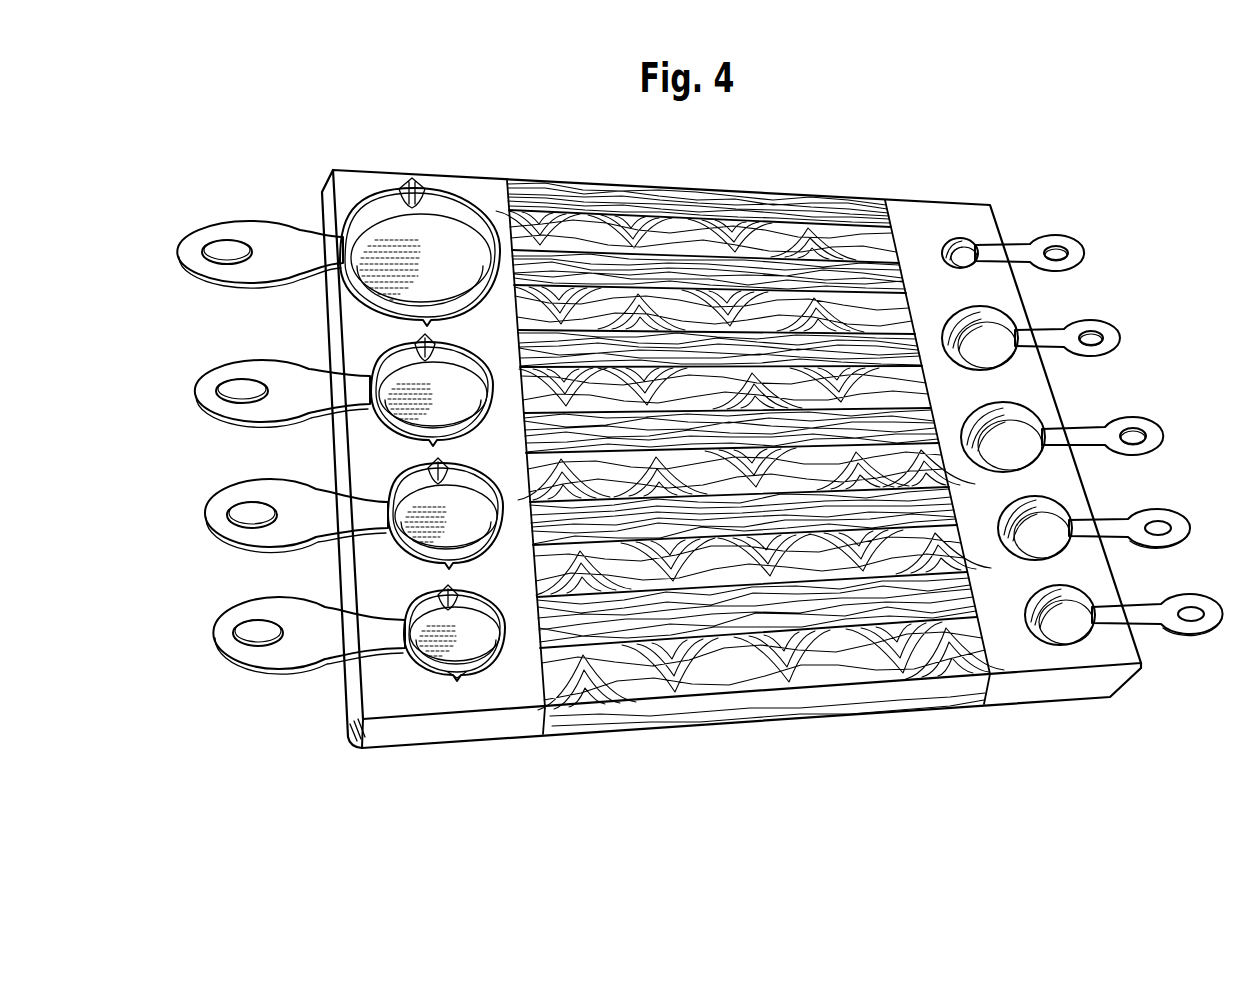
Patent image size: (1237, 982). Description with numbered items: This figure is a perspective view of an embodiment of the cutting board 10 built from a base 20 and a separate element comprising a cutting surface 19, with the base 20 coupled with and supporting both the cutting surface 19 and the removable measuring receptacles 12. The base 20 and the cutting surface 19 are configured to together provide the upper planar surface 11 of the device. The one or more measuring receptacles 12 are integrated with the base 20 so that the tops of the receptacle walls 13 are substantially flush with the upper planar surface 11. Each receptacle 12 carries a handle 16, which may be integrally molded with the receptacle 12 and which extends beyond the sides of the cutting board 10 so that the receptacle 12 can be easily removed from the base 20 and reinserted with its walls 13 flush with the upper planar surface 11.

The cutting board 10 is at (882, 172).
The upper planar surface 11 is at (893, 523).
The measuring receptacle 12 is at (453, 643).
The receptacle walls 13 is at (490, 665).
The handle 16 is at (293, 653).
The cutting surface 19 is at (775, 705).
The base 20 is at (1040, 683).